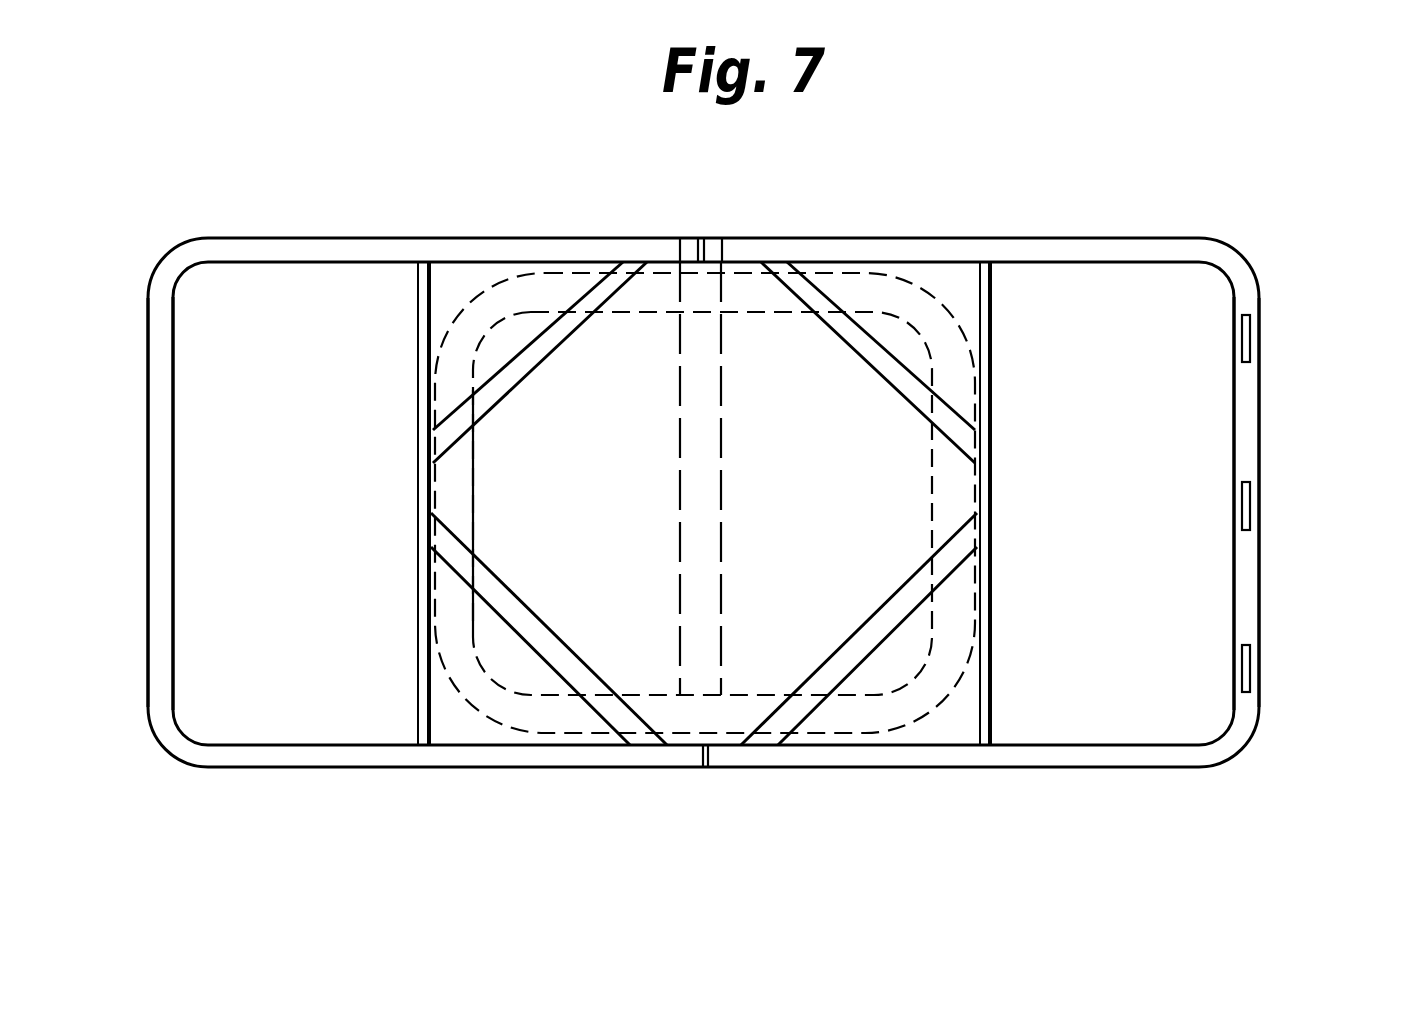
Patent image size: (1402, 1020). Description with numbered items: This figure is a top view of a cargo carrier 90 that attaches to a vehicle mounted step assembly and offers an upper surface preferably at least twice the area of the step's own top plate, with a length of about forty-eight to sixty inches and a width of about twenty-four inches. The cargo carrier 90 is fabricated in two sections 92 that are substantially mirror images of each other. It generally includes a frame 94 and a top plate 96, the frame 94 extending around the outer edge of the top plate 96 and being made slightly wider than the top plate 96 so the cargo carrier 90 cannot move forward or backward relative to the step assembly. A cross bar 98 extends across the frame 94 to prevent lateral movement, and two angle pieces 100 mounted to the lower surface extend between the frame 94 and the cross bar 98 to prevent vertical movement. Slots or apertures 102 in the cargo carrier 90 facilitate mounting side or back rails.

The cargo carrier 90 is at (262, 812).
The sections 92 is at (310, 240).
The frame 94 is at (152, 362).
The top plate 96 is at (212, 522).
The cross bar 98 is at (420, 297).
The angle pieces 100 is at (600, 287).
The slots or apertures 102 is at (1250, 660).